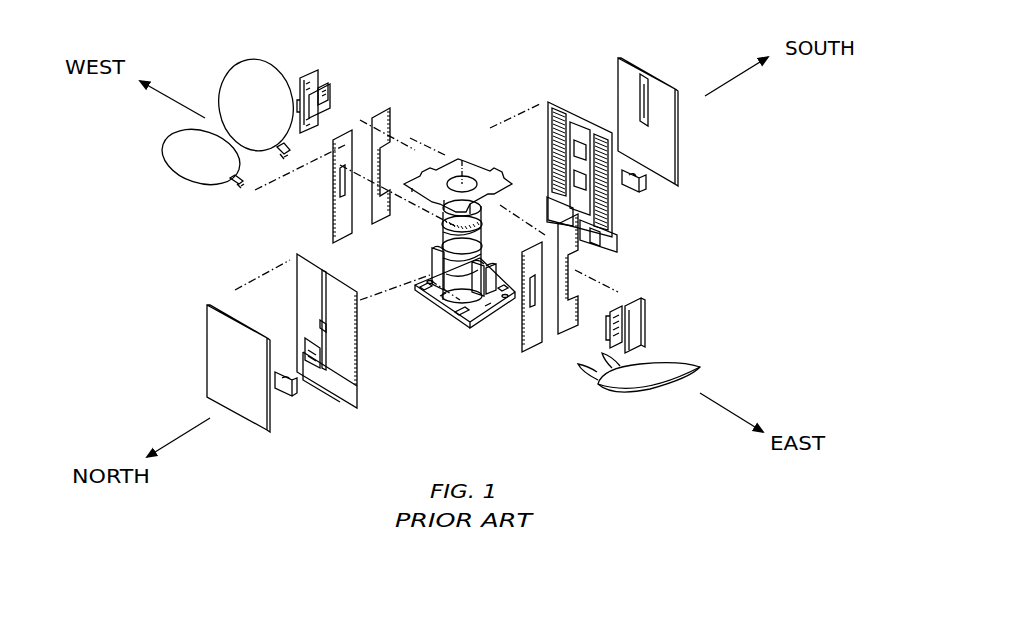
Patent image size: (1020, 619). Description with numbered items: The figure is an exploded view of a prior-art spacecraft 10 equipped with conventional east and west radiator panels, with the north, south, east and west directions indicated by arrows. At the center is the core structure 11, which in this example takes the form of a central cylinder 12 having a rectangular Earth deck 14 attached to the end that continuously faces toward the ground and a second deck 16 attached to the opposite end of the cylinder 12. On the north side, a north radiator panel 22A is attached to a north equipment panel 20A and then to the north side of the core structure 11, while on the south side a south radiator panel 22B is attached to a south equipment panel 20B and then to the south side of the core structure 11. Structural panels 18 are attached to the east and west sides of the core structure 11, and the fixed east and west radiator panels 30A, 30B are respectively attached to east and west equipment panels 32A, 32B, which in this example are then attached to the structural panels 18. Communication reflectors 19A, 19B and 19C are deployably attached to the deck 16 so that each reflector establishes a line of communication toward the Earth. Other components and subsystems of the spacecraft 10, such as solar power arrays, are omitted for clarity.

The spacecraft 10 is at (433, 44).
The core structure 11 is at (460, 136).
The central cylinder 12 is at (446, 233).
The Earth deck 14 is at (446, 176).
The second deck 16 is at (456, 308).
The structural panels 18 is at (335, 213).
The communication reflector 19A is at (169, 169).
The communication reflector 19B is at (238, 74).
The communication reflector 19C is at (627, 385).
The north equipment panel 20A is at (305, 280).
The south equipment panel 20B is at (556, 119).
The north radiator panel 22A is at (216, 332).
The south radiator panel 22B is at (626, 76).
The east radiator panel 30A is at (630, 316).
The west radiator panel 30B is at (297, 63).
The east equipment panel 32A is at (621, 294).
The west equipment panel 32B is at (321, 93).